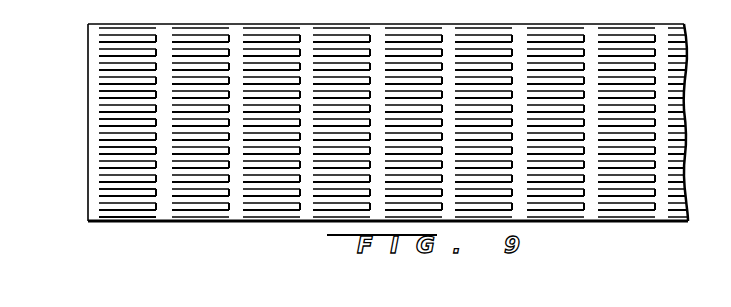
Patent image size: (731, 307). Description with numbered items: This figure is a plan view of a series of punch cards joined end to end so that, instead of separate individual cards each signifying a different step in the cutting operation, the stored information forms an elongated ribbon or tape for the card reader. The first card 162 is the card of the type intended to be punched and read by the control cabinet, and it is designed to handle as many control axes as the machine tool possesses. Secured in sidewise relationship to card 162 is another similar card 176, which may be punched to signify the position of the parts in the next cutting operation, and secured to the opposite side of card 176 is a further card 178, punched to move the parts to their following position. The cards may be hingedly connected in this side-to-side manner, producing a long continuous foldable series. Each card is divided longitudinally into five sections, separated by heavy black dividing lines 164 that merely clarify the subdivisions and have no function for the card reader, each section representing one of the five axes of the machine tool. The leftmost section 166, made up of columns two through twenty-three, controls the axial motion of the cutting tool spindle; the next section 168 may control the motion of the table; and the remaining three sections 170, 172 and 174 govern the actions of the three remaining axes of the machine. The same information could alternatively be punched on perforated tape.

The card 162 is at (130, 29).
The card 176 is at (200, 29).
The card 178 is at (277, 29).
The section 174 is at (96, 42).
The section 172 is at (96, 90).
The section 170 is at (96, 118).
The section 168 is at (96, 150).
The section 166 is at (95, 192).
The dividing line 164 is at (105, 70).